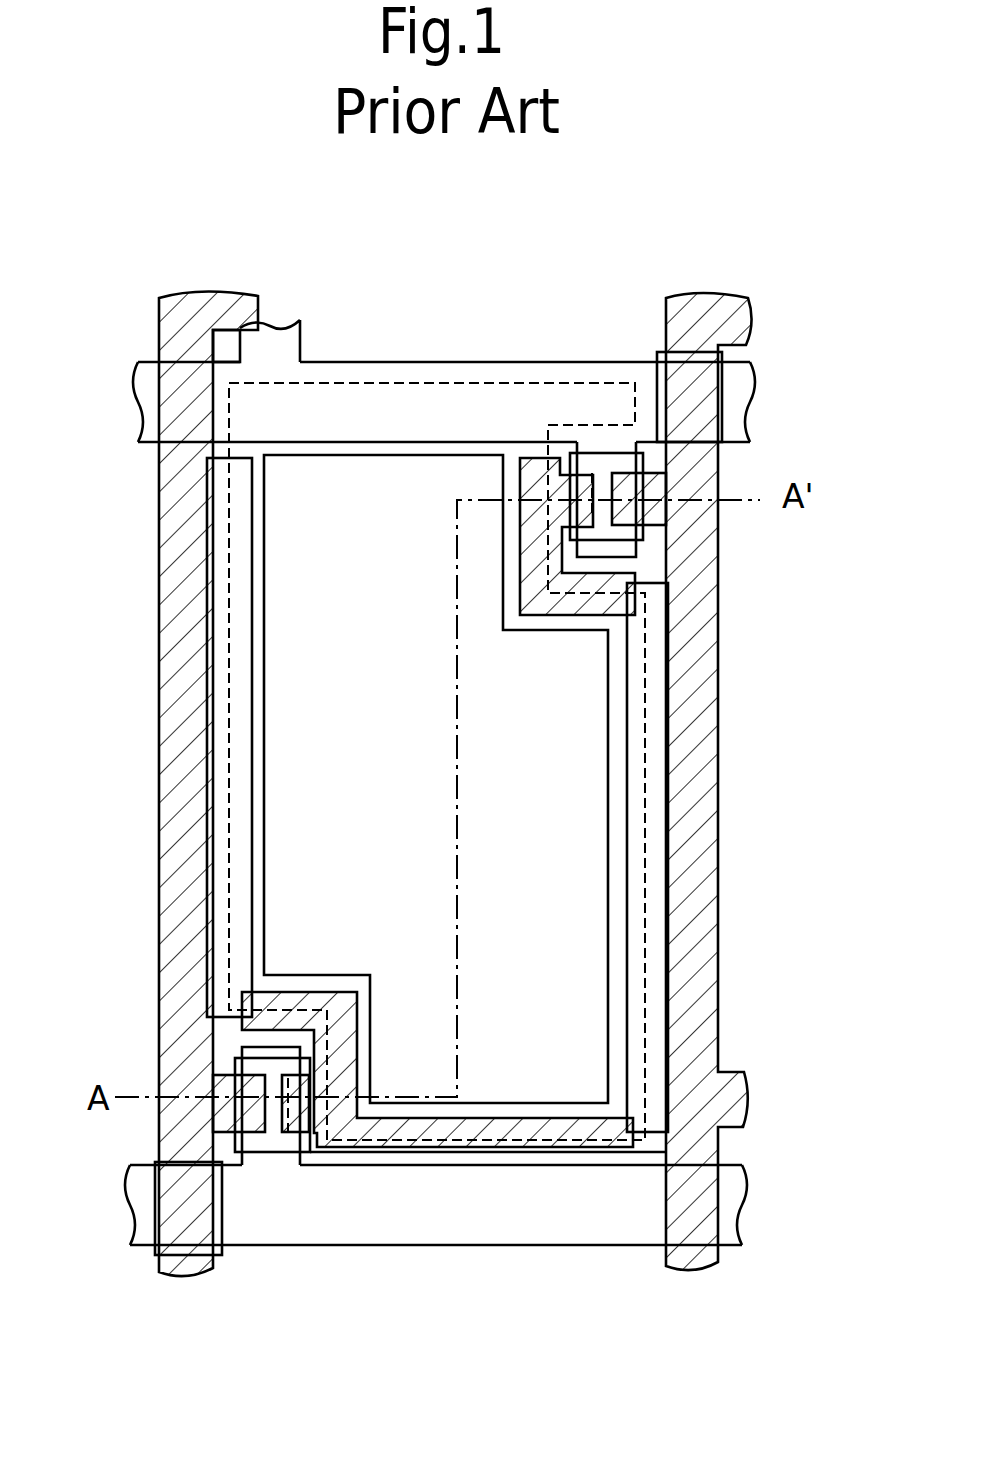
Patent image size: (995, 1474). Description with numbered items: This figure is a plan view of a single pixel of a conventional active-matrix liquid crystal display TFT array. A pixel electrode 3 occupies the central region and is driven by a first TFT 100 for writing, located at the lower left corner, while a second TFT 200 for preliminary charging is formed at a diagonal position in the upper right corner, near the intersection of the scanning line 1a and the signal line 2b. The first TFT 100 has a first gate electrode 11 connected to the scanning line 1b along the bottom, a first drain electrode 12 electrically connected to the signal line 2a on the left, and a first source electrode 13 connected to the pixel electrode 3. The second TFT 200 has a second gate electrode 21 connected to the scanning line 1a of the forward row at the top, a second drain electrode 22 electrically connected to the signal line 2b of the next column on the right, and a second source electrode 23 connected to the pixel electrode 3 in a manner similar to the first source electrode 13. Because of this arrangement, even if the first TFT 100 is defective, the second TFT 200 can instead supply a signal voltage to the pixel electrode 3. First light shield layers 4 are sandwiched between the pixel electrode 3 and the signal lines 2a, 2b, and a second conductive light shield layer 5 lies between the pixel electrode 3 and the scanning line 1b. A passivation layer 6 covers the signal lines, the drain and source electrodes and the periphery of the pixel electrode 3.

The scanning line 1a is at (283, 343).
The scanning line 1b is at (732, 1182).
The signal line 2a is at (172, 505).
The signal line 2b is at (695, 713).
The pixel electrode 3 is at (593, 1022).
The first light shield layer 4 is at (220, 597).
The second conductive light shield layer 5 is at (478, 1135).
The passivation layer 6 is at (617, 820).
The first gate electrode 11 is at (258, 1052).
The first drain electrode 12 is at (215, 1123).
The first source electrode 13 is at (310, 1075).
The first TFT 100 is at (273, 1145).
The second TFT 200 is at (607, 485).
The second gate electrode 21 is at (617, 550).
The second drain electrode 22 is at (625, 490).
The second source electrode 23 is at (575, 595).